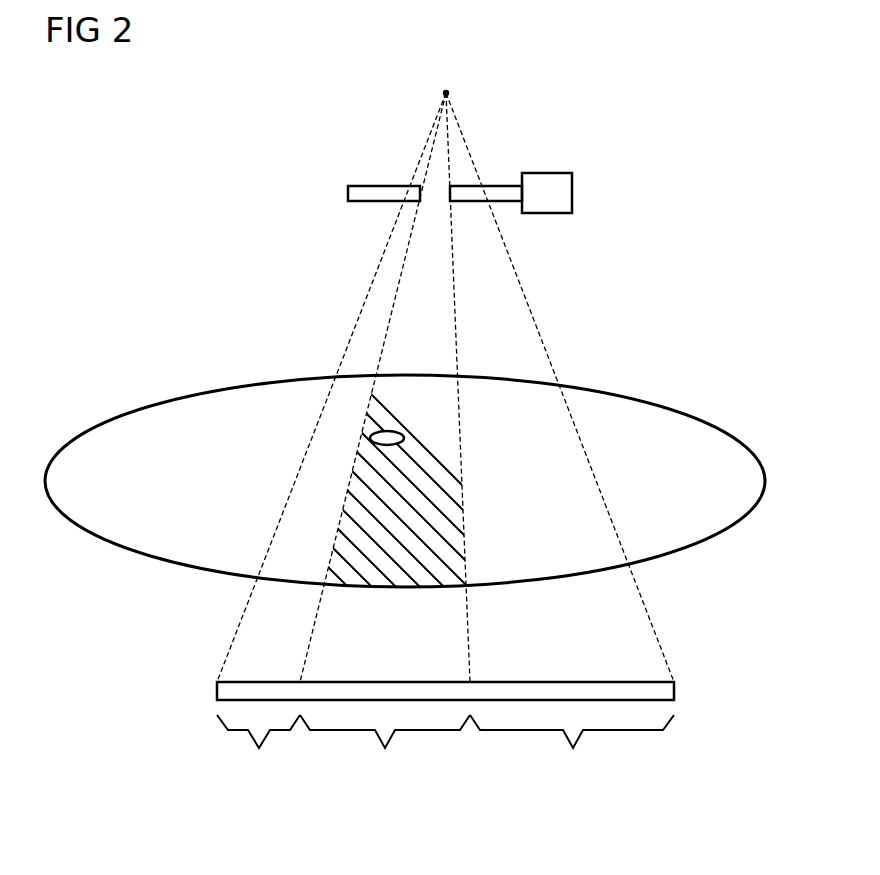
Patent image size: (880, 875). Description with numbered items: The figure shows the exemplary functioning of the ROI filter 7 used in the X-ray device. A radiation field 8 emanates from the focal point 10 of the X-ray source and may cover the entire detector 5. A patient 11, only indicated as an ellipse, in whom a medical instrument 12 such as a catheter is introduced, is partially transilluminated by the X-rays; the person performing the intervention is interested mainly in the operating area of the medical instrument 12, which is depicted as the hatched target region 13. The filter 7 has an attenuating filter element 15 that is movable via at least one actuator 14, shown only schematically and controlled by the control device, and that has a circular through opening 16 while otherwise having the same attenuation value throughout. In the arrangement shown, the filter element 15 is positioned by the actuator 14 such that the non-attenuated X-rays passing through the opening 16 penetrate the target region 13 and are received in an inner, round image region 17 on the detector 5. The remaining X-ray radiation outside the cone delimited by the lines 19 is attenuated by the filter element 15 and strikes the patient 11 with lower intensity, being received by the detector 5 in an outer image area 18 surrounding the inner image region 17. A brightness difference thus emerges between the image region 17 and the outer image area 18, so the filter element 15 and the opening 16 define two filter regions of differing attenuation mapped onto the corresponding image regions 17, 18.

The detector 5 is at (674, 690).
The filter 7 is at (405, 153).
The radiation field 8 is at (468, 387).
The focal point 10 is at (446, 93).
The patient 11 is at (679, 435).
The medical instrument 12 is at (404, 438).
The target region 13 is at (425, 402).
The actuator 14 is at (543, 173).
The filter element 15 is at (370, 186).
The through opening 16 is at (450, 220).
The image region 17 is at (385, 750).
The outer image area 18 is at (445, 750).
The lines 19 is at (402, 268).